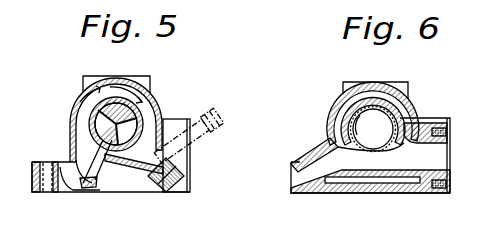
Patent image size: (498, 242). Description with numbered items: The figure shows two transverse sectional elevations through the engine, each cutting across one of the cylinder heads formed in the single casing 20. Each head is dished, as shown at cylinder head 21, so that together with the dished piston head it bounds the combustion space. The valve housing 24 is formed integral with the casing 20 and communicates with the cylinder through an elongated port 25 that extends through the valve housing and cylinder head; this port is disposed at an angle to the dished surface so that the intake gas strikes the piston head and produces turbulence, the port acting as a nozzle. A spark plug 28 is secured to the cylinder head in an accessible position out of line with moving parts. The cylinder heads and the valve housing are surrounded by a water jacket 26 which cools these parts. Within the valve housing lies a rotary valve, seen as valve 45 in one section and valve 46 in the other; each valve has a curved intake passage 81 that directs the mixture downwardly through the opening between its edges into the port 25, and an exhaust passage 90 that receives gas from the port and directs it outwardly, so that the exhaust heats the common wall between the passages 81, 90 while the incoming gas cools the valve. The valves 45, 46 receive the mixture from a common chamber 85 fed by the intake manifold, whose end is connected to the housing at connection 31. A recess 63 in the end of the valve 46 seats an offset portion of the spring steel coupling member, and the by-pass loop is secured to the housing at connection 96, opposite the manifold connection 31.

In FIG. 5, the valve housing 24 is at (96, 101).
In FIG. 5, the water jacket 26 is at (91, 117).
In FIG. 5, the intake passage 81 is at (102, 125).
In FIG. 6, the intake passage 81 is at (372, 142).
In FIG. 5, the casing 20 is at (78, 170).
In FIG. 5, the valve 45 is at (141, 119).
In FIG. 5, the exhaust passage 90 is at (134, 160).
In FIG. 5, the port 25 is at (97, 181).
In FIG. 5, the cylinder head 21 is at (138, 182).
In FIG. 5, the spark plug 28 is at (206, 142).
In FIG. 6, the valve 46 is at (382, 111).
In FIG. 6, the recess 63 is at (394, 141).
In FIG. 6, the intake manifold end connection 31 is at (448, 157).
In FIG. 6, the loop connection 96 is at (290, 185).
In FIG. 6, the common chamber 85 is at (386, 152).